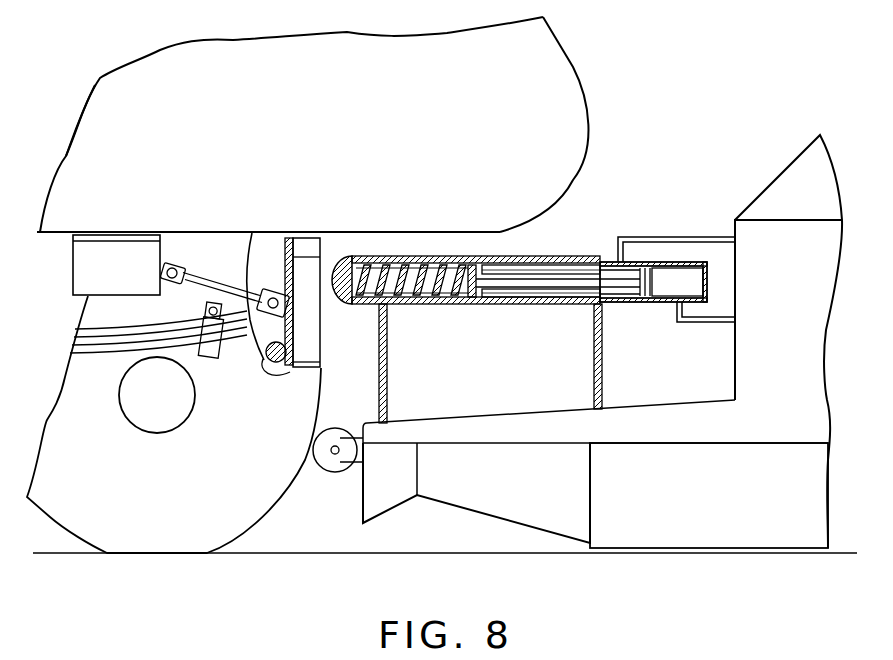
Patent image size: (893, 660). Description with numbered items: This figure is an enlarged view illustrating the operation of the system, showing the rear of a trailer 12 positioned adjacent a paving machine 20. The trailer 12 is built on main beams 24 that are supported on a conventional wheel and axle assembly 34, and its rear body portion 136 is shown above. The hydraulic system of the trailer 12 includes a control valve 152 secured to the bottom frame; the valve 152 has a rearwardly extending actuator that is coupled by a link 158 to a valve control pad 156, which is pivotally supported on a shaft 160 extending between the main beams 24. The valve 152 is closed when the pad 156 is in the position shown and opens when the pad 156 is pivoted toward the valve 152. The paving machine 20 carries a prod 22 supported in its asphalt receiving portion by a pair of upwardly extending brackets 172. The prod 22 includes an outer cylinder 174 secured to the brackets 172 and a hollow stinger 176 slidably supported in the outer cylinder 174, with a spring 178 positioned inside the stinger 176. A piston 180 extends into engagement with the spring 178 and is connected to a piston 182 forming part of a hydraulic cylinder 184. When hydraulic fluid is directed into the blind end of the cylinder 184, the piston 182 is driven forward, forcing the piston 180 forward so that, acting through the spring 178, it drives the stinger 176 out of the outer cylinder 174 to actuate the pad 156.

The trailer 12 is at (112, 62).
The main beam 24 is at (97, 138).
The body rear portion 136 is at (564, 74).
The control valve 152 is at (85, 262).
The link 158 is at (232, 284).
The wheel and axle assembly 34 is at (117, 421).
The shaft 160 is at (264, 360).
The valve control pad 156 is at (312, 347).
The stinger 176 is at (342, 304).
The outer cylinder 174 is at (440, 304).
The spring 178 is at (383, 256).
The piston 180 is at (512, 284).
The piston 182 is at (557, 278).
The hydraulic cylinder 184 is at (632, 303).
The prod 22 is at (587, 230).
The paving machine 20 is at (757, 175).
The bracket 172 is at (387, 377).